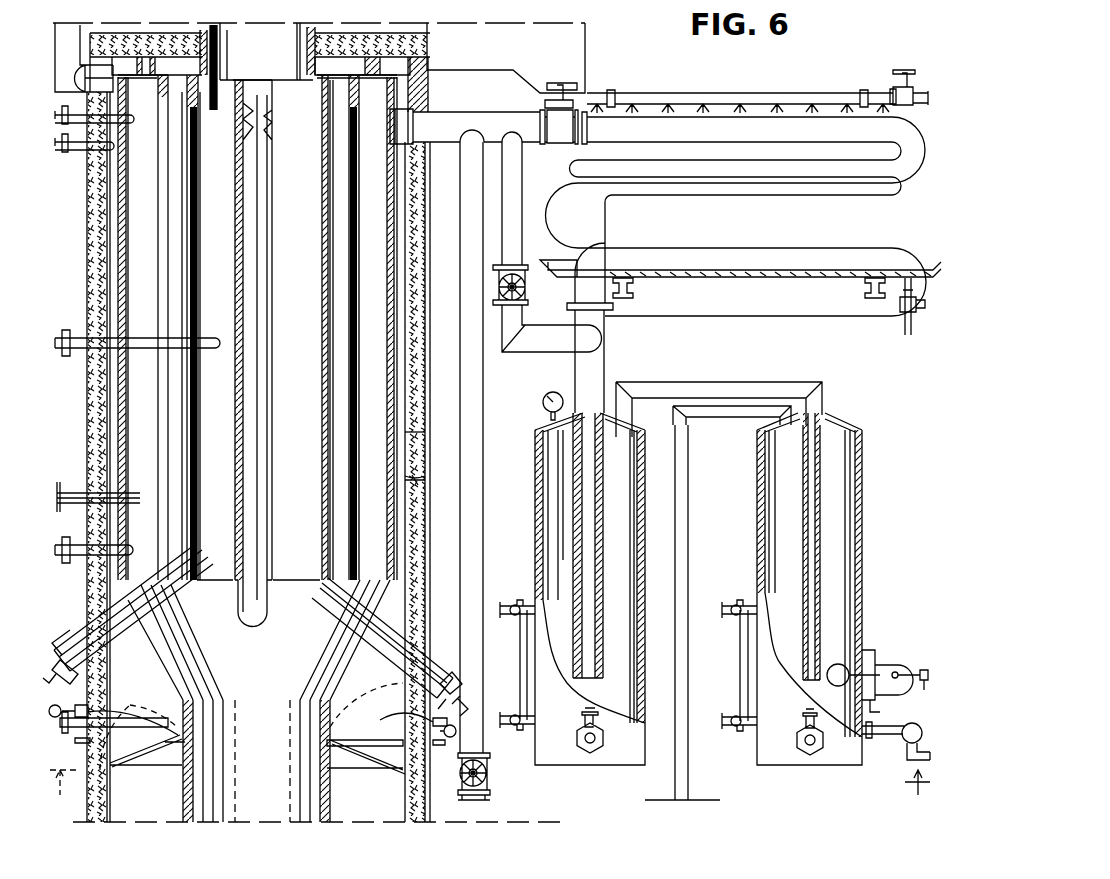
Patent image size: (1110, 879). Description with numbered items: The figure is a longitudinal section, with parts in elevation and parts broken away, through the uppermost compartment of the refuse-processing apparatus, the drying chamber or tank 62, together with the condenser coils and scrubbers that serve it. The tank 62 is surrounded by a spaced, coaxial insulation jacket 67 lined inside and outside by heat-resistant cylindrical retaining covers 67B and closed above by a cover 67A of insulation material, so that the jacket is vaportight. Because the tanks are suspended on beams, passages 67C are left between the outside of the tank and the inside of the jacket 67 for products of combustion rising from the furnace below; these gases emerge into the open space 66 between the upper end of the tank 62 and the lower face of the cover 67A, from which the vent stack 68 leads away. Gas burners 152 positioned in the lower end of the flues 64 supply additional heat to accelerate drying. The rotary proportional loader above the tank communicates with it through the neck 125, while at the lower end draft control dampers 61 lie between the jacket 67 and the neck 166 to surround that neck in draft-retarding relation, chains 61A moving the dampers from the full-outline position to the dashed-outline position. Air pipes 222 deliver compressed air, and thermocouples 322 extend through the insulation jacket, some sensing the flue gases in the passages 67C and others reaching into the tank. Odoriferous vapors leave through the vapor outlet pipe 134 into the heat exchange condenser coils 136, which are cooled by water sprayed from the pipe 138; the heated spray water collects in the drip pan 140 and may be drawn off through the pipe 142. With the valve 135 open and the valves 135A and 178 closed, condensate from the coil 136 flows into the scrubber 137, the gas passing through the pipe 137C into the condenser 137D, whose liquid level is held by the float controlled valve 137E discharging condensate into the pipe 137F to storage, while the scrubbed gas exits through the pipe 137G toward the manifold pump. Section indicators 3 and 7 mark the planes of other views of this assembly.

The section line of FIG. 3 is at (154, 816).
The section line of FIG. 7 is at (490, 791).
The draft control dampers 61 is at (426, 790).
The chains 61A is at (457, 733).
The drying chamber or tank 62 is at (130, 244).
The flues 64 is at (186, 410).
The open space 66 is at (168, 65).
The insulation jacket 67 is at (421, 240).
The cover of insulation material 67A is at (421, 47).
The cylindrical retaining covers 67B is at (425, 432).
The passages 67C is at (424, 479).
The vent stack 68 is at (76, 52).
The neck 125 is at (270, 61).
The vapor outlet pipe 134 is at (432, 125).
The valve 135 is at (573, 92).
The valve 135A is at (518, 265).
The condenser coil 136 is at (883, 219).
The scrubber 137 is at (538, 500).
The pipe 137C is at (737, 372).
The condenser 137D is at (861, 505).
The float controlled valve 137E is at (882, 660).
The pipe 137F is at (903, 761).
The pipe 137G is at (685, 541).
The pipe 138 is at (642, 98).
The drip pan 140 is at (803, 281).
The pipe 142 is at (903, 318).
The gas burners 152 is at (66, 662).
The neck 166 is at (313, 809).
The valve 178 is at (490, 781).
The air pipes 222 is at (75, 492).
The thermocouples 322 is at (75, 125).